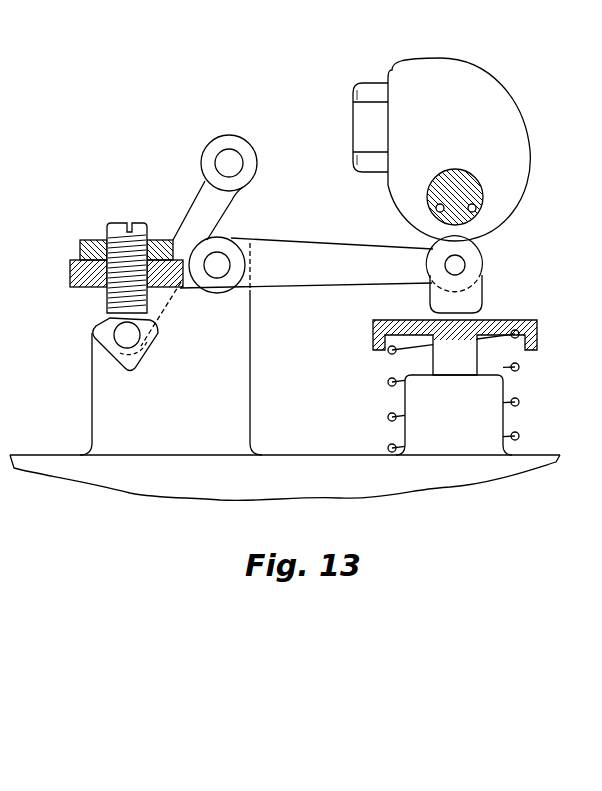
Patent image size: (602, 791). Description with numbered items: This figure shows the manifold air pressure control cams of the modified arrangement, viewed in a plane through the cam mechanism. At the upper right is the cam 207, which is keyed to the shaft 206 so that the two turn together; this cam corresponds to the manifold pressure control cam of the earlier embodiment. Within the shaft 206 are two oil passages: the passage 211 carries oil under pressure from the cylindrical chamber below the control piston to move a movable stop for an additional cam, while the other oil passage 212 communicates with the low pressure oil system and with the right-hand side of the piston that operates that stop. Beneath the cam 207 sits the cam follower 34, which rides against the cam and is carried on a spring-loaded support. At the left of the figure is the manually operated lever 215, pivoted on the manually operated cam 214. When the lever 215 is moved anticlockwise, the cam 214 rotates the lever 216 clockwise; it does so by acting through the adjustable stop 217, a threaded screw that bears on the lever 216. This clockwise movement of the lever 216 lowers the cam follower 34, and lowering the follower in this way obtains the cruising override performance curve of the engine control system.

The cam 207 is at (441, 149).
The shaft 206 is at (462, 203).
The passage 211 is at (436, 209).
The oil passage 212 is at (477, 210).
The cam follower 34 is at (537, 340).
The manually operated cam 214 is at (158, 341).
The lever 215 is at (203, 158).
The lever 216 is at (70, 264).
The adjustable stop 217 is at (117, 224).